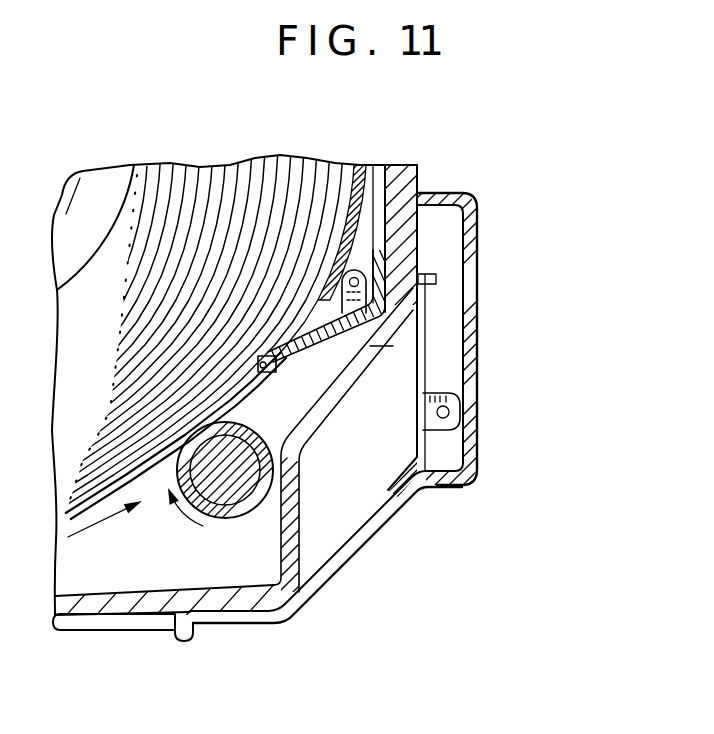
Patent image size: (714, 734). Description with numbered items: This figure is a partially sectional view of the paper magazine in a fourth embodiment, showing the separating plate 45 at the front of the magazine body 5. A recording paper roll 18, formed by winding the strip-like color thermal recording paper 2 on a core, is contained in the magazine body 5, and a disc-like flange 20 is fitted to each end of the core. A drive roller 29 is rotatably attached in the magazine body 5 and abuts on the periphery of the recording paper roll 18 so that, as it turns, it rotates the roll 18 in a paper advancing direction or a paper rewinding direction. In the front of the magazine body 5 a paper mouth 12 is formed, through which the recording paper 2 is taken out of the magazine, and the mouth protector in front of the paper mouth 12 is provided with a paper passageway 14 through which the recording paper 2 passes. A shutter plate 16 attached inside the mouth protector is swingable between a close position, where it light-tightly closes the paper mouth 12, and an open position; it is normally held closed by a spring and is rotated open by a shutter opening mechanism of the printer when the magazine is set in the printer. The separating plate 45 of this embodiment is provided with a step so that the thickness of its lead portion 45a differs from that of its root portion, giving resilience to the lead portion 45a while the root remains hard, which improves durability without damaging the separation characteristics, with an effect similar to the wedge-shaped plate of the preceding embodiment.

The flange 20 is at (94, 163).
The recording paper roll 18 is at (357, 196).
The paper passageway 14 is at (468, 263).
The paper mouth 12 is at (403, 310).
The shutter plate 16 is at (450, 447).
The separating plate 45 is at (328, 360).
The lead portion 45a is at (258, 362).
The recording paper 2 is at (262, 408).
The magazine body 5 is at (385, 545).
The drive roller 29 is at (242, 532).